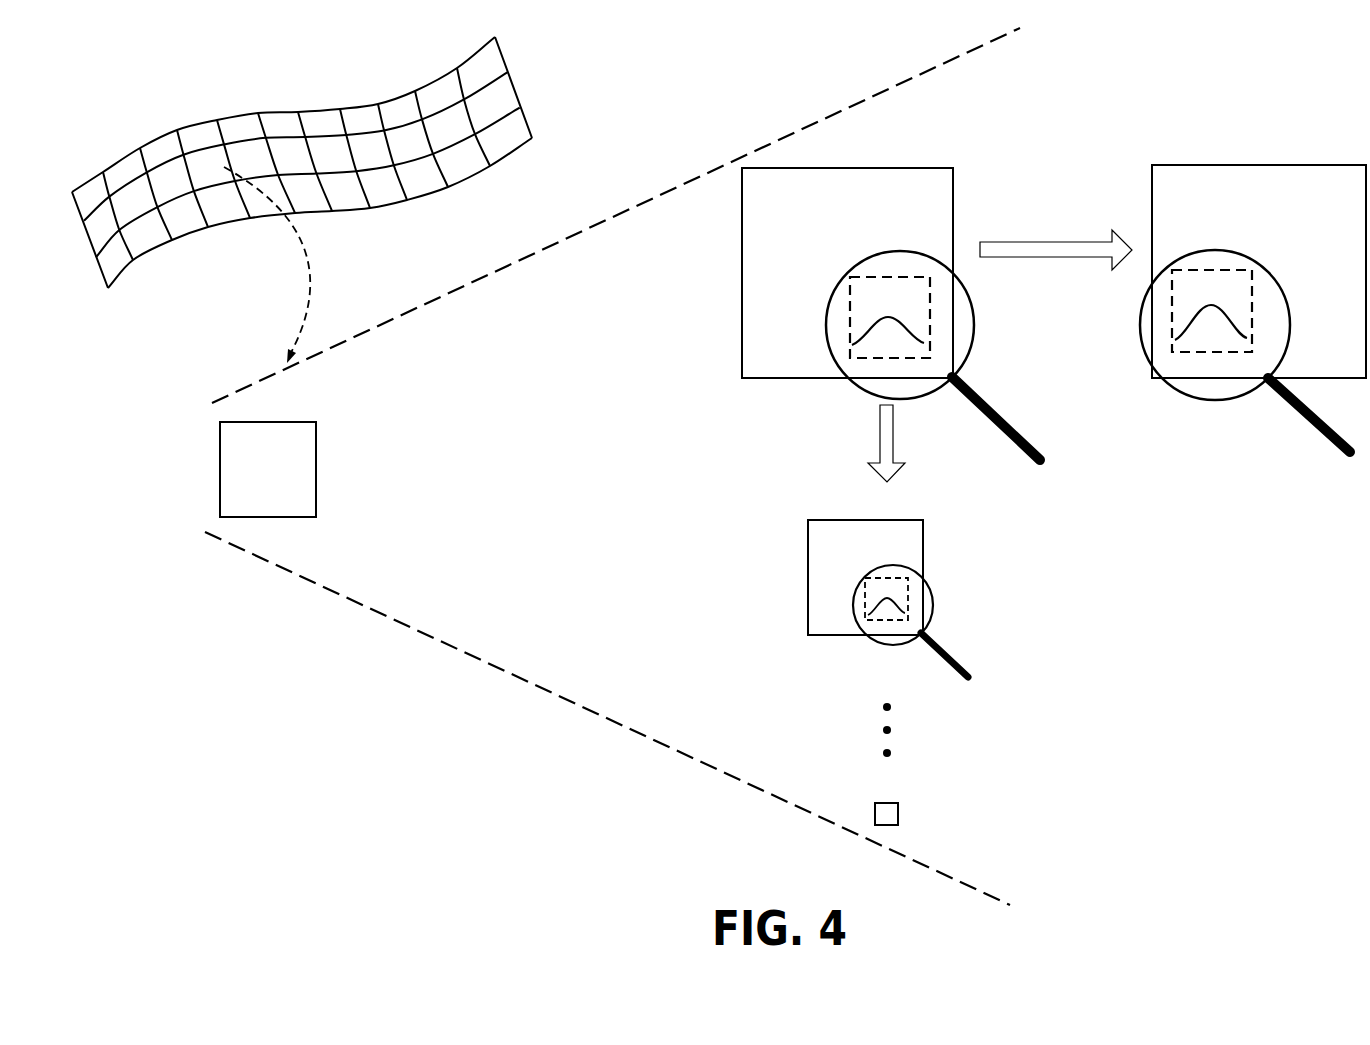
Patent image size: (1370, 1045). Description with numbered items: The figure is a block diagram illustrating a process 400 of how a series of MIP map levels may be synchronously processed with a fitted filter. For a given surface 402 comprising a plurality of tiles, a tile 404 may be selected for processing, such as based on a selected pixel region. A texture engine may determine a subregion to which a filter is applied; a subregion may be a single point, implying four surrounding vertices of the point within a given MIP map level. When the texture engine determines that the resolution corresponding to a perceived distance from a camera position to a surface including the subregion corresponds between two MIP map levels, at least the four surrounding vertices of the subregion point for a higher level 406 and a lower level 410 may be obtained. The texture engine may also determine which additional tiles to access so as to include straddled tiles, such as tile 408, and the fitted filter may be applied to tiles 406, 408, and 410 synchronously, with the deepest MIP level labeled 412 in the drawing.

The process 400 is at (1352, 90).
The surface 402 is at (482, 172).
The tile 404 is at (300, 517).
The higher level 406 is at (970, 357).
The tile 408 is at (1215, 400).
The lower level 410 is at (930, 620).
The MIP level N texture 412 is at (898, 825).